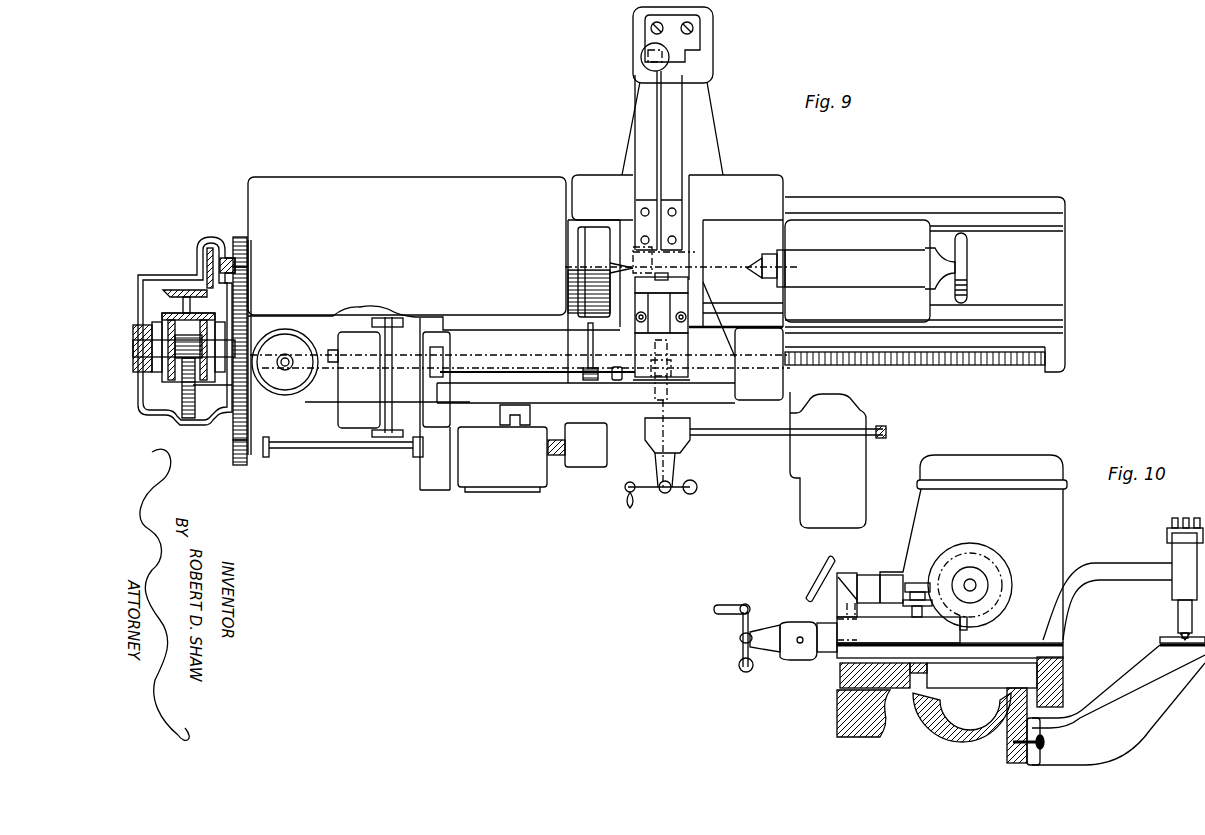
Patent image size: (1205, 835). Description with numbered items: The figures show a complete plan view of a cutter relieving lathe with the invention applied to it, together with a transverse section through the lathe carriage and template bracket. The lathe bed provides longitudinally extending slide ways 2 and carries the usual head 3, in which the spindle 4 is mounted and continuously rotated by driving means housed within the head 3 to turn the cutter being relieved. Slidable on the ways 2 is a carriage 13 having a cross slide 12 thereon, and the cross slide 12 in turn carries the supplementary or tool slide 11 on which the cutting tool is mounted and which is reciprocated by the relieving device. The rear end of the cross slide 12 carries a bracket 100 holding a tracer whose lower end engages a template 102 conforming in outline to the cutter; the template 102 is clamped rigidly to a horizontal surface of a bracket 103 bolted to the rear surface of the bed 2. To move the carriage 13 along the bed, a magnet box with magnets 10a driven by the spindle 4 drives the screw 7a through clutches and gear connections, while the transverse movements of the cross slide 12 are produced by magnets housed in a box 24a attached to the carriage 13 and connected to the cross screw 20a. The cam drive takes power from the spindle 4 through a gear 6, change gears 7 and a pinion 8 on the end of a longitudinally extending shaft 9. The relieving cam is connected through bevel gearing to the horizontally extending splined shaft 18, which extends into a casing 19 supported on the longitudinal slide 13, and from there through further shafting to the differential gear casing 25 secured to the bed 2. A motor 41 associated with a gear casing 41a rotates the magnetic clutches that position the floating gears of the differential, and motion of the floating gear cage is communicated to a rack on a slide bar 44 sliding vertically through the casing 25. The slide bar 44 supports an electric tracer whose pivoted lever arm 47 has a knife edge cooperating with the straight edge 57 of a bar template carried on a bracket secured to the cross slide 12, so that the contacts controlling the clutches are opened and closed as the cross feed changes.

In FIG. 9, the slide ways 2 is at (916, 362).
In FIG. 10, the slide ways 2 is at (912, 734).
In FIG. 9, the head 3 is at (299, 190).
In FIG. 10, the head 3 is at (922, 527).
In FIG. 9, the spindle 4 is at (575, 245).
In FIG. 10, the spindle 4 is at (992, 560).
In FIG. 9, the gear 6 is at (240, 236).
In FIG. 9, the change gears 7 is at (248, 313).
In FIG. 9, the screw 7a is at (973, 365).
In FIG. 9, the pinion 8 is at (235, 454).
In FIG. 9, the shaft 9 is at (297, 451).
In FIG. 9, the magnets 10a is at (153, 378).
In FIG. 9, the tool slide 11 is at (690, 373).
In FIG. 10, the tool slide 11 is at (837, 602).
In FIG. 9, the cross slide 12 is at (684, 304).
In FIG. 10, the cross slide 12 is at (958, 655).
In FIG. 9, the carriage 13 is at (776, 186).
In FIG. 10, the carriage 13 is at (837, 675).
In FIG. 9, the splined shaft 18 is at (595, 352).
In FIG. 9, the casing 19 is at (591, 454).
In FIG. 9, the cross screw 20a is at (645, 444).
In FIG. 10, the cross screw 20a is at (740, 637).
In FIG. 9, the box 24a is at (803, 492).
In FIG. 9, the differential gear casing 25 is at (506, 474).
In FIG. 9, the motor 41 is at (285, 340).
In FIG. 9, the gear casing 41a is at (360, 410).
In FIG. 9, the slide bar 44 is at (517, 422).
In FIG. 9, the lever arm 47 is at (542, 371).
In FIG. 9, the straight edge 57 is at (413, 388).
In FIG. 9, the bracket 100 is at (667, 156).
In FIG. 10, the bracket 100 is at (1112, 567).
In FIG. 9, the template 102 is at (697, 45).
In FIG. 10, the bracket 103 is at (1131, 683).